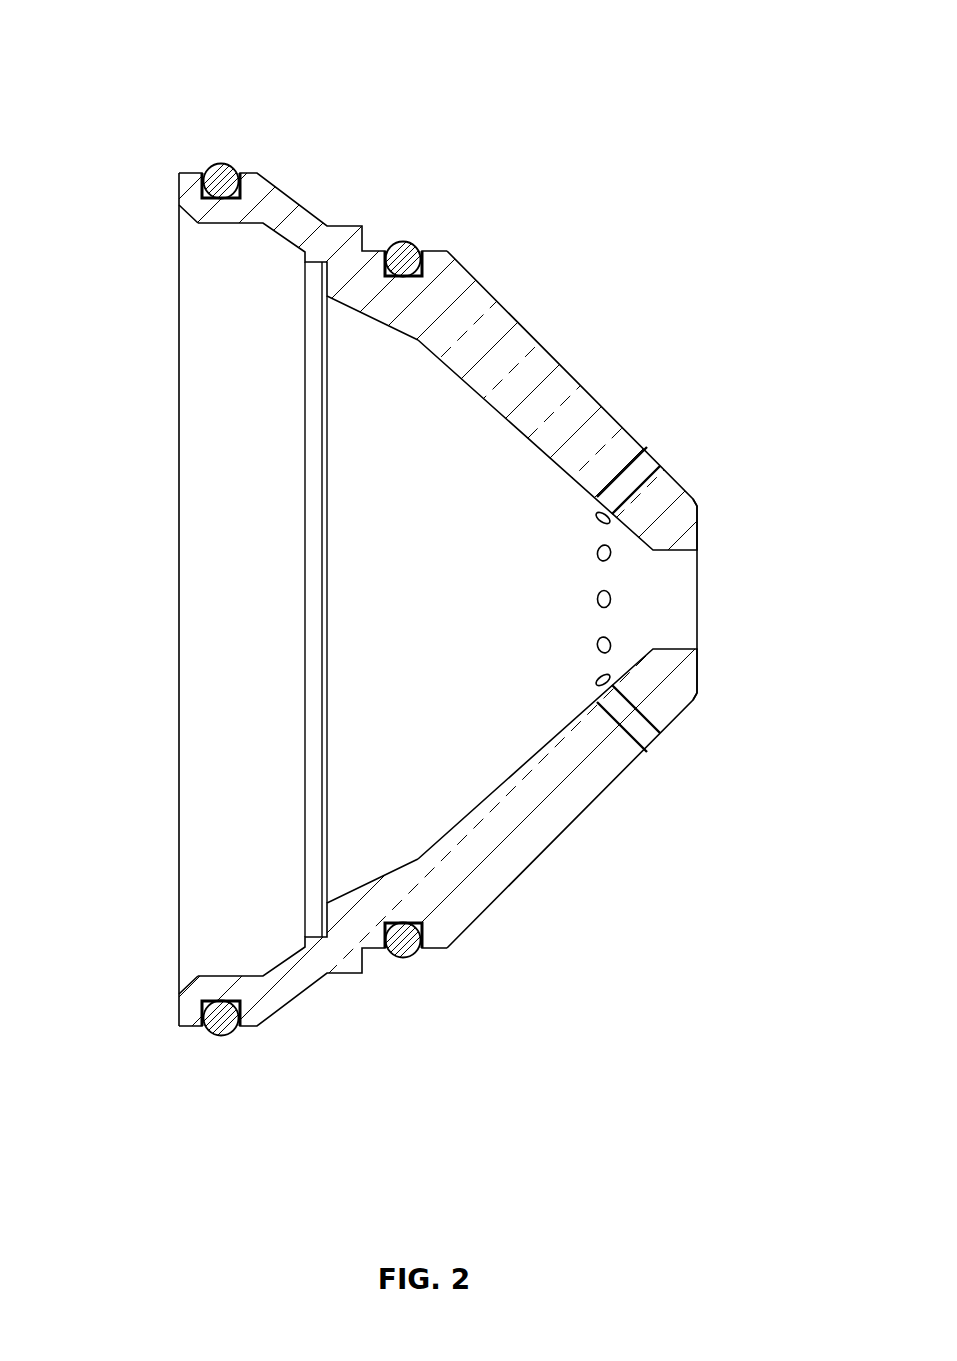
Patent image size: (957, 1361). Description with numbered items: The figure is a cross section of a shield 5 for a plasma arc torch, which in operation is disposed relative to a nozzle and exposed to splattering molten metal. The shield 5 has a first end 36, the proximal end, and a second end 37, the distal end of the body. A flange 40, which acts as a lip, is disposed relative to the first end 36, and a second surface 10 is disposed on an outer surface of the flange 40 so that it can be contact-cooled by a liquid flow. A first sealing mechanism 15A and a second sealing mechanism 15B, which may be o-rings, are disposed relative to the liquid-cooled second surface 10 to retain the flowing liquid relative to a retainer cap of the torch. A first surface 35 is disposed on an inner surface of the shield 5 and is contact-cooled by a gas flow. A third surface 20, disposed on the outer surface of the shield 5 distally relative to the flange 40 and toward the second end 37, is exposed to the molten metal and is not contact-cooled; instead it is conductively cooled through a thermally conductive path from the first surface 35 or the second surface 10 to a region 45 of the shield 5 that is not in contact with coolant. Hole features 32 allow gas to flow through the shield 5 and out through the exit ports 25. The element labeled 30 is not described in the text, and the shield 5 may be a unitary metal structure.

The shield 5 is at (478, 585).
The second surface 10 is at (280, 163).
The first sealing mechanism 15A is at (214, 170).
The second sealing mechanism 15B is at (410, 243).
The third surface 20 is at (571, 302).
The exit ports of the shield 25 is at (663, 443).
The outlet end face 30 is at (699, 605).
The hole features 32 is at (572, 603).
The first surface 35 is at (375, 592).
The first end 36 is at (150, 211).
The second end 37 is at (770, 485).
The flange 40 is at (280, 100).
The region 45 is at (474, 355).